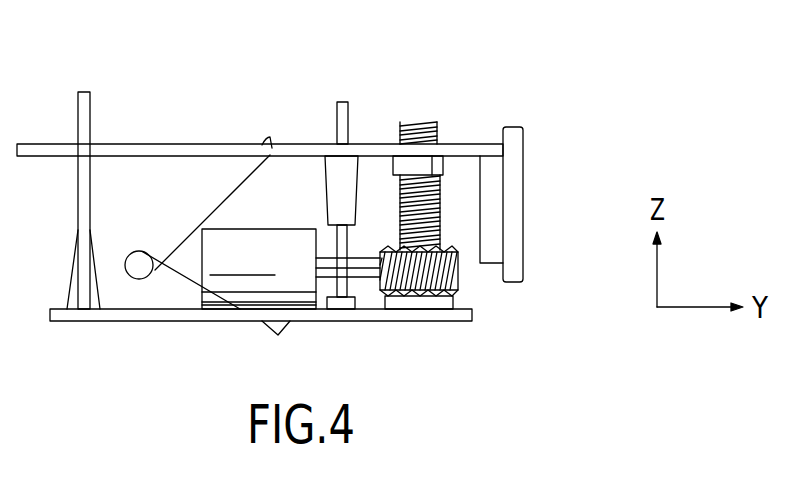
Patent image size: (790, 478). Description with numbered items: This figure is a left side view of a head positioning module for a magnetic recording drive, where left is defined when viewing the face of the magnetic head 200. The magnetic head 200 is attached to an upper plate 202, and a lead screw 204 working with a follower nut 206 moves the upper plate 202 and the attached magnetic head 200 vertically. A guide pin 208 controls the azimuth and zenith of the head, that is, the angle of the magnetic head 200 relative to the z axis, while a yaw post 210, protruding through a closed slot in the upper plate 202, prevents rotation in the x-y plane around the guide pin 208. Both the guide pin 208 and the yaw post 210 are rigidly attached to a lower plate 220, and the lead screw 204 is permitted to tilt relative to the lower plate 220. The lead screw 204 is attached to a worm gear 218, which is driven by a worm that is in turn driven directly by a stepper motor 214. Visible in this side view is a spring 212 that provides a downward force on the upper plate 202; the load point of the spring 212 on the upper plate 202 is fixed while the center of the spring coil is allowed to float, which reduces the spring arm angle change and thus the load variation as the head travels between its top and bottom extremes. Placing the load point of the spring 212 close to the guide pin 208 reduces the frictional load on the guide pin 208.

The magnetic head 200 is at (525, 190).
The upper plate 202 is at (158, 143).
The lead screw 204 is at (412, 122).
The follower nut 206 is at (435, 168).
The guide pin 208 is at (338, 102).
The yaw post 210 is at (80, 98).
The spring 212 is at (210, 215).
The stepper motor 214 is at (213, 303).
The worm gear 218 is at (457, 277).
The lower plate 220 is at (133, 322).